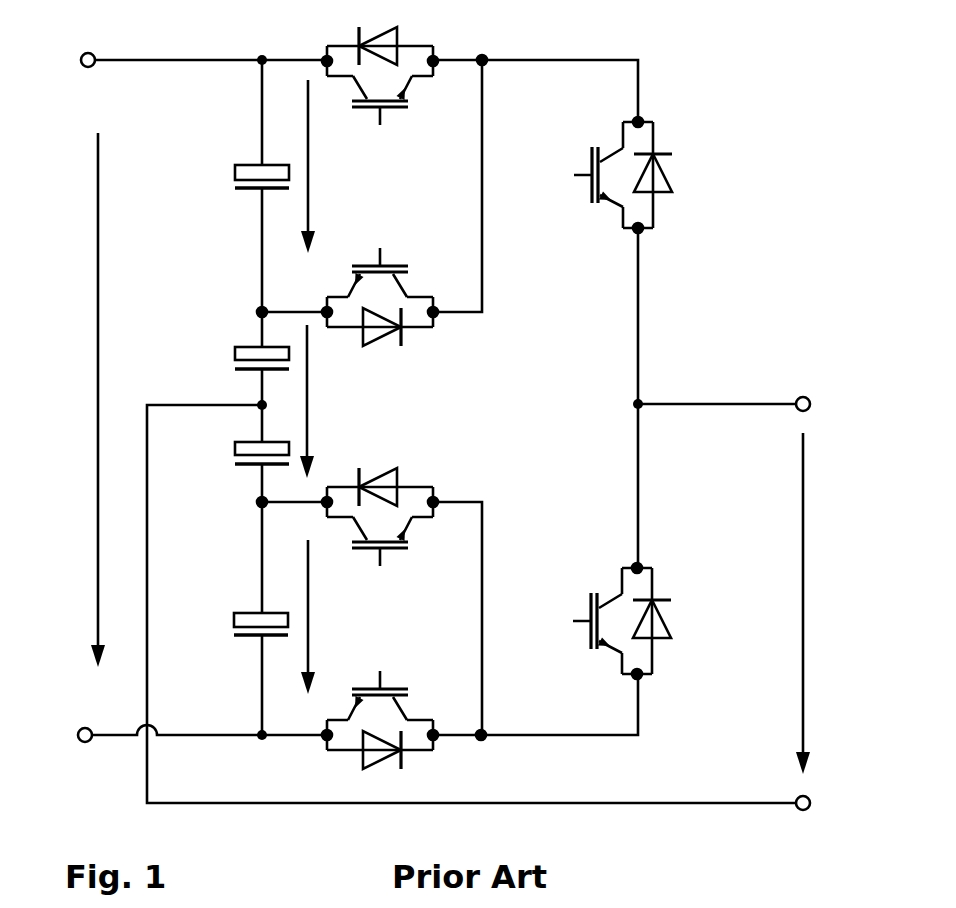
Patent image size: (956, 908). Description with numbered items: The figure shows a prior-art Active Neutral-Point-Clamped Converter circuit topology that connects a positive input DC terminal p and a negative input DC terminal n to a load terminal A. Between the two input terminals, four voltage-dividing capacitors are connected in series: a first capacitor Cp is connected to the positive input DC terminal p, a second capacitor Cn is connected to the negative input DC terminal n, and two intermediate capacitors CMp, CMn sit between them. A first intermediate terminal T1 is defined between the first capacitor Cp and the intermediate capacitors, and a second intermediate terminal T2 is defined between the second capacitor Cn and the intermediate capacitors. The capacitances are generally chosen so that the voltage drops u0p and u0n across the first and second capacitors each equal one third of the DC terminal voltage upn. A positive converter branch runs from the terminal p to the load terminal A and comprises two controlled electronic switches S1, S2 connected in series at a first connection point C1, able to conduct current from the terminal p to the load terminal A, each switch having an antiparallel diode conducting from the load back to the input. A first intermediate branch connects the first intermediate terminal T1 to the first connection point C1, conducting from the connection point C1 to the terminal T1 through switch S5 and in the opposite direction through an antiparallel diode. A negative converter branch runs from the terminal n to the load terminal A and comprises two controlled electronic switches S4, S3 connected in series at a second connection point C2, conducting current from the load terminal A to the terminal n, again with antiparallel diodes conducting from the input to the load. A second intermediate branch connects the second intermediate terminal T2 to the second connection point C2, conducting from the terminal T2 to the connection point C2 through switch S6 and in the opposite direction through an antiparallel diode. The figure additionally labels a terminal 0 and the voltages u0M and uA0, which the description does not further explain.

The controlled electronic switch S1 is at (380, 100).
The controlled electronic switch S2 is at (597, 175).
The controlled electronic switch S3 is at (602, 621).
The controlled electronic switch S4 is at (380, 710).
The switch S5 is at (380, 281).
The switch S6 is at (380, 539).
The first capacitor Cp is at (237, 187).
The intermediate capacitor CMp is at (224, 367).
The intermediate capacitor CMn is at (223, 461).
The second capacitor Cn is at (237, 632).
The first intermediate terminal T1 is at (238, 309).
The second intermediate terminal T2 is at (238, 514).
The first connection point C1 is at (493, 40).
The second connection point C2 is at (502, 761).
The positive input DC terminal p is at (69, 63).
The negative input DC terminal n is at (71, 735).
The load terminal A is at (819, 406).
The midpoint reference terminal 0 is at (818, 807).
The DC terminal voltage upn is at (65, 400).
The voltage drop u0p is at (340, 166).
The midpoint partial voltage u0M is at (342, 401).
The voltage drop u0n is at (339, 617).
The output voltage uA0 is at (770, 603).